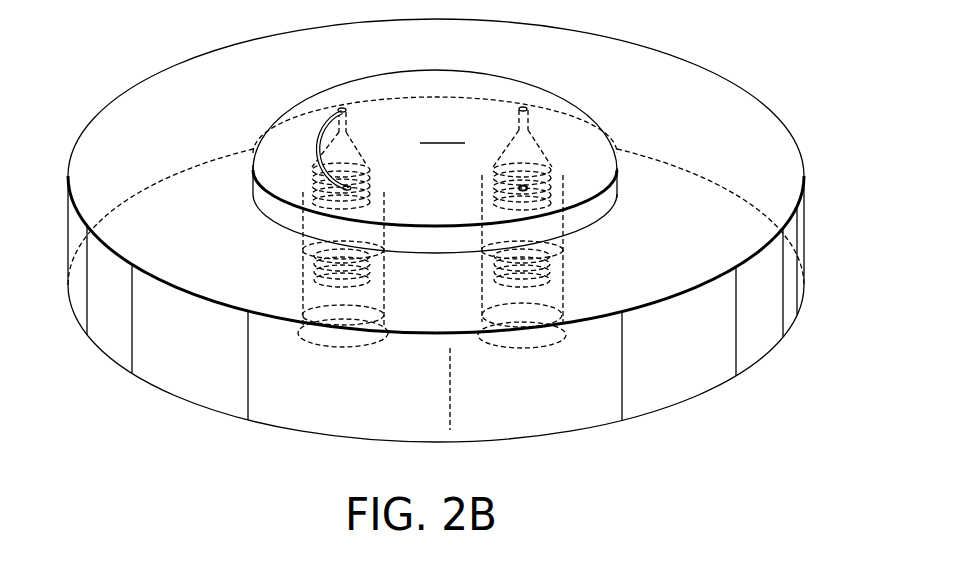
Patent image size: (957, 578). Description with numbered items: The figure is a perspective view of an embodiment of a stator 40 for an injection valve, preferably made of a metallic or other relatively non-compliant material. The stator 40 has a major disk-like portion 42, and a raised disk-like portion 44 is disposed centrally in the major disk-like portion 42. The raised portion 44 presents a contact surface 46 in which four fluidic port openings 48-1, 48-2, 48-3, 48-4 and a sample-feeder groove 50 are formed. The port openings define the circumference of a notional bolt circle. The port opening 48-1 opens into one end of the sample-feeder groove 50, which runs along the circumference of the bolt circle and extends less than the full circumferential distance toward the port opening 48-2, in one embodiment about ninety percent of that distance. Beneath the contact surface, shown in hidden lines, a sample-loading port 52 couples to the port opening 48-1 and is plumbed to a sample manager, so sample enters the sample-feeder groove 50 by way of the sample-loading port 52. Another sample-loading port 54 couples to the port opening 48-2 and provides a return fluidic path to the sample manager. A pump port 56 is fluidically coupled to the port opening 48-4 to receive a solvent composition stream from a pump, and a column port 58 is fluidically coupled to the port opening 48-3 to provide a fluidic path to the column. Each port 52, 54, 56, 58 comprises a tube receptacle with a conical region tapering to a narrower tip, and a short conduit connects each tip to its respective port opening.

The stator 40 is at (770, 99).
The major disk-like portion 42 is at (685, 370).
The raised disk-like portion 44 is at (617, 188).
The contact surface 46 is at (440, 143).
The port opening 48-1 is at (340, 187).
The port opening 48-2 is at (342, 108).
The port opening 48-3 is at (525, 108).
The port opening 48-4 is at (524, 186).
The sample-feeder groove 50 is at (303, 136).
The sample-loading port 52 is at (368, 296).
The sample-loading port 54 is at (370, 160).
The pump port 56 is at (545, 296).
The column port 58 is at (487, 216).